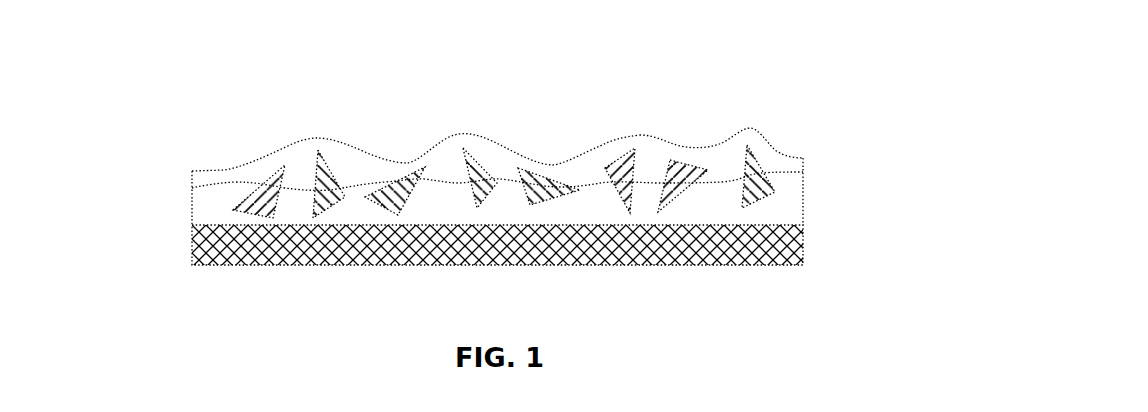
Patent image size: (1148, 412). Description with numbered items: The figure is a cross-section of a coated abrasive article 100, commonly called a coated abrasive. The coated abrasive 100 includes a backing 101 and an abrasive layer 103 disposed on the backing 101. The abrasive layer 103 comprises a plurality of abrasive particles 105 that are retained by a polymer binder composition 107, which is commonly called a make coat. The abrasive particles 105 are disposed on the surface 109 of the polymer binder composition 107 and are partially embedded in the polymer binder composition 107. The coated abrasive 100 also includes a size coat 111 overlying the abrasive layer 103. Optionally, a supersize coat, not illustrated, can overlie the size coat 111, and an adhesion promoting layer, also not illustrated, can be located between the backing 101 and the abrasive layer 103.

The coated abrasive article 100 is at (721, 62).
The backing 101 is at (658, 266).
The abrasive layer 103 is at (829, 181).
The abrasive particles 105 is at (392, 182).
The polymer binder composition 107 is at (217, 210).
The surface 109 is at (455, 186).
The size coat 111 is at (305, 146).